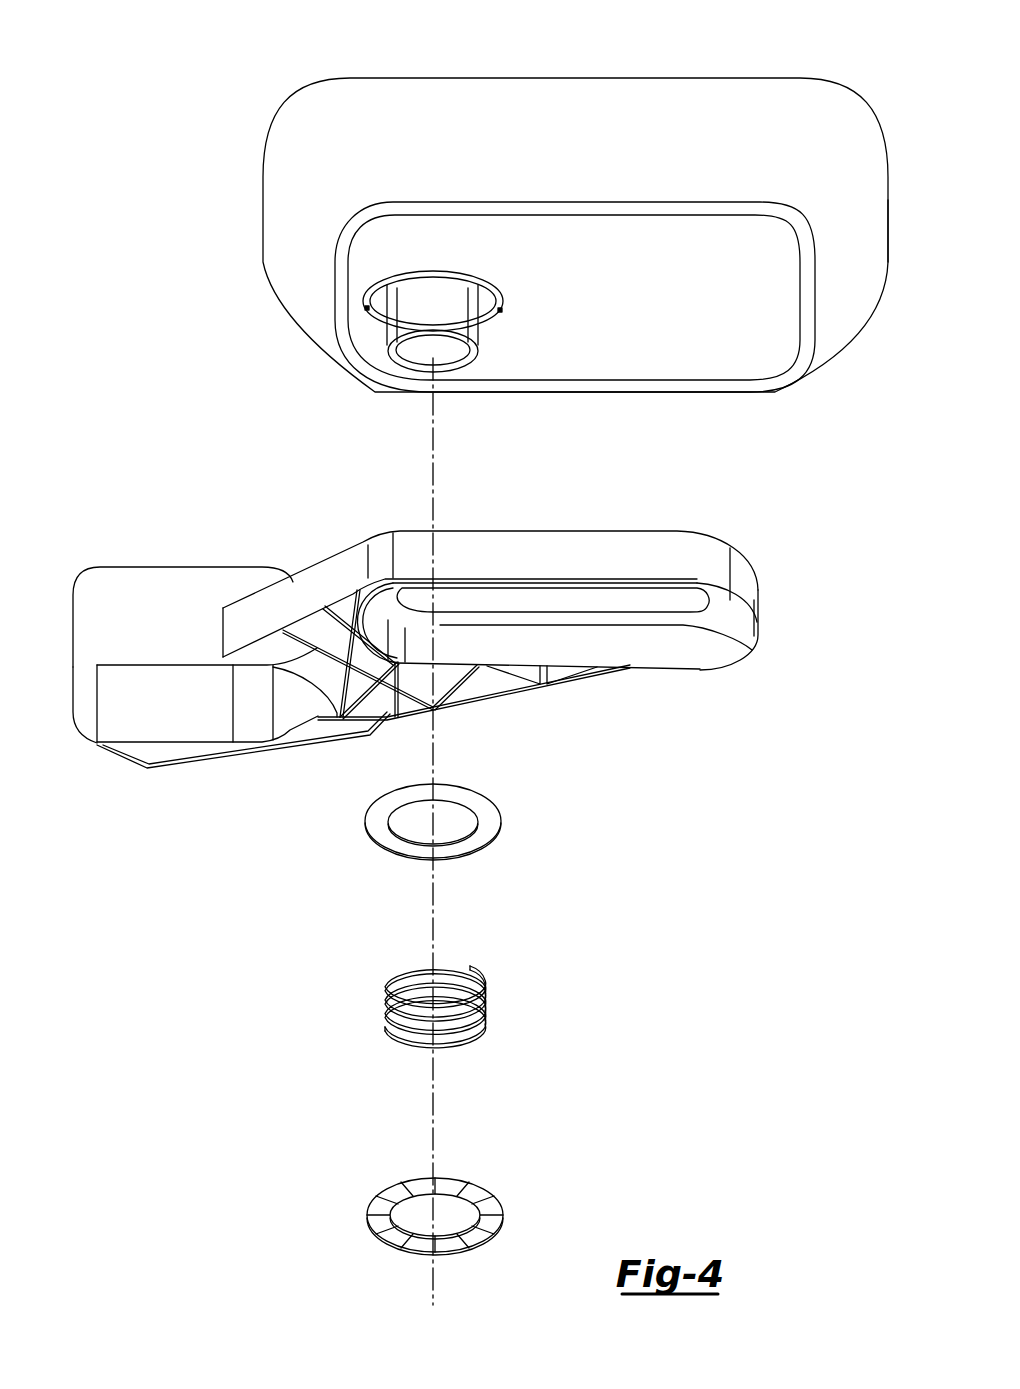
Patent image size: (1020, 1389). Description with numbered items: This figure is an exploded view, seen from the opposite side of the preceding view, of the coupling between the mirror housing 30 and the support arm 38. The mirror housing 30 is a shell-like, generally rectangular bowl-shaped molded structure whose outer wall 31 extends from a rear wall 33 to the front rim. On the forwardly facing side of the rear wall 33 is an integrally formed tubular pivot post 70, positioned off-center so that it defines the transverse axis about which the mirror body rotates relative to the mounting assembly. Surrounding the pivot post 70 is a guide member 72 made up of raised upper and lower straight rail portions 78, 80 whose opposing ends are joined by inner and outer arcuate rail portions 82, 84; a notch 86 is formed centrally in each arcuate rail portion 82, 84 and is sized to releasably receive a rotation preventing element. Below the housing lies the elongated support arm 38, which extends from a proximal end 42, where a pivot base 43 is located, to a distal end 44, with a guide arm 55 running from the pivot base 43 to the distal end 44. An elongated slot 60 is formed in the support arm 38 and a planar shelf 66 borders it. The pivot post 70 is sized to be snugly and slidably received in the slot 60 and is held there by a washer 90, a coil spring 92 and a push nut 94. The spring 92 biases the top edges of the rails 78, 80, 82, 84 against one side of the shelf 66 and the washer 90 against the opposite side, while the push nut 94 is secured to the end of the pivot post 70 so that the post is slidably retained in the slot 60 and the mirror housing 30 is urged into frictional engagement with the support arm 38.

The mirror housing 30 is at (845, 95).
The outer wall 31 is at (858, 267).
The rear wall 33 is at (673, 307).
The support arm 38 is at (433, 624).
The proximal end 42 is at (72, 688).
The pivot base 43 is at (97, 583).
The distal end 44 is at (597, 612).
The guide arm 55 is at (312, 576).
The elongated slot 60 is at (683, 618).
The planar shelf 66 is at (722, 605).
The pivot post 70 is at (485, 354).
The guide member 72 is at (407, 291).
The upper straight rail portion 78 is at (451, 275).
The lower straight rail portion 80 is at (372, 352).
The inner arcuate rail portion 82 is at (367, 332).
The outer arcuate rail portion 84 is at (490, 284).
The notch 86 is at (503, 310).
The washer 90 is at (503, 817).
The coil spring 92 is at (487, 985).
The push nut 94 is at (500, 1212).